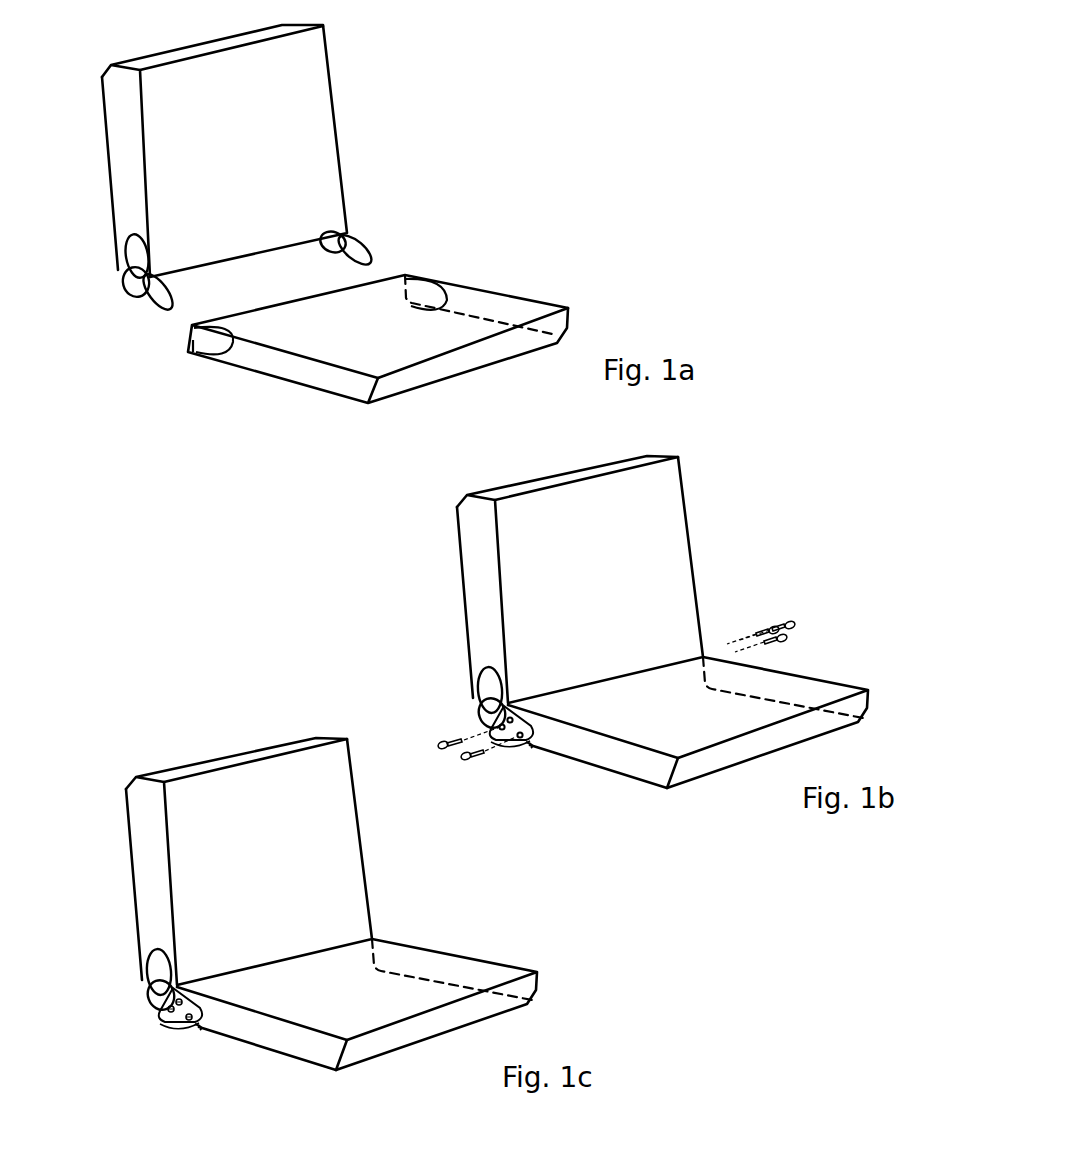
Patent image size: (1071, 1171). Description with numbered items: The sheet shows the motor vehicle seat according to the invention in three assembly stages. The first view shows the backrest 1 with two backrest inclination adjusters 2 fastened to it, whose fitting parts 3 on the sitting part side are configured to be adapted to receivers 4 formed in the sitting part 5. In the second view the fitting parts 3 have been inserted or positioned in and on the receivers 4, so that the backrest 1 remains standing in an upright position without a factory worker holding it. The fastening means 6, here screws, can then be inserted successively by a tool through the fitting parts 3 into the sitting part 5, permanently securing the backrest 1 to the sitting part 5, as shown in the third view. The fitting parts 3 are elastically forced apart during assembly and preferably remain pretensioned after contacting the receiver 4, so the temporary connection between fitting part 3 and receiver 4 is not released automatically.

In FIG. 1A, the backrest 1 is at (252, 161).
In FIG. 1B, the backrest 1 is at (617, 585).
In FIG. 1C, the backrest 1 is at (249, 861).
In FIG. 1A, the backrest inclination adjuster 2 is at (132, 284).
In FIG. 1B, the backrest inclination adjuster 2 is at (466, 714).
In FIG. 1C, the backrest inclination adjuster 2 is at (124, 981).
In FIG. 1A, the fitting part 3 is at (158, 300).
In FIG. 1B, the fitting part 3 is at (508, 737).
In FIG. 1C, the fitting part 3 is at (135, 1028).
In FIG. 1A, the receiver 4 is at (207, 346).
In FIG. 1B, the receiver 4 is at (520, 748).
In FIG. 1C, the receiver 4 is at (160, 1058).
In FIG. 1A, the sitting part 5 is at (360, 338).
In FIG. 1B, the sitting part 5 is at (670, 720).
In FIG. 1C, the sitting part 5 is at (357, 1004).
In FIG. 1B, the fastening means 6 is at (467, 757).
In FIG. 1C, the fastening means 6 is at (114, 1015).